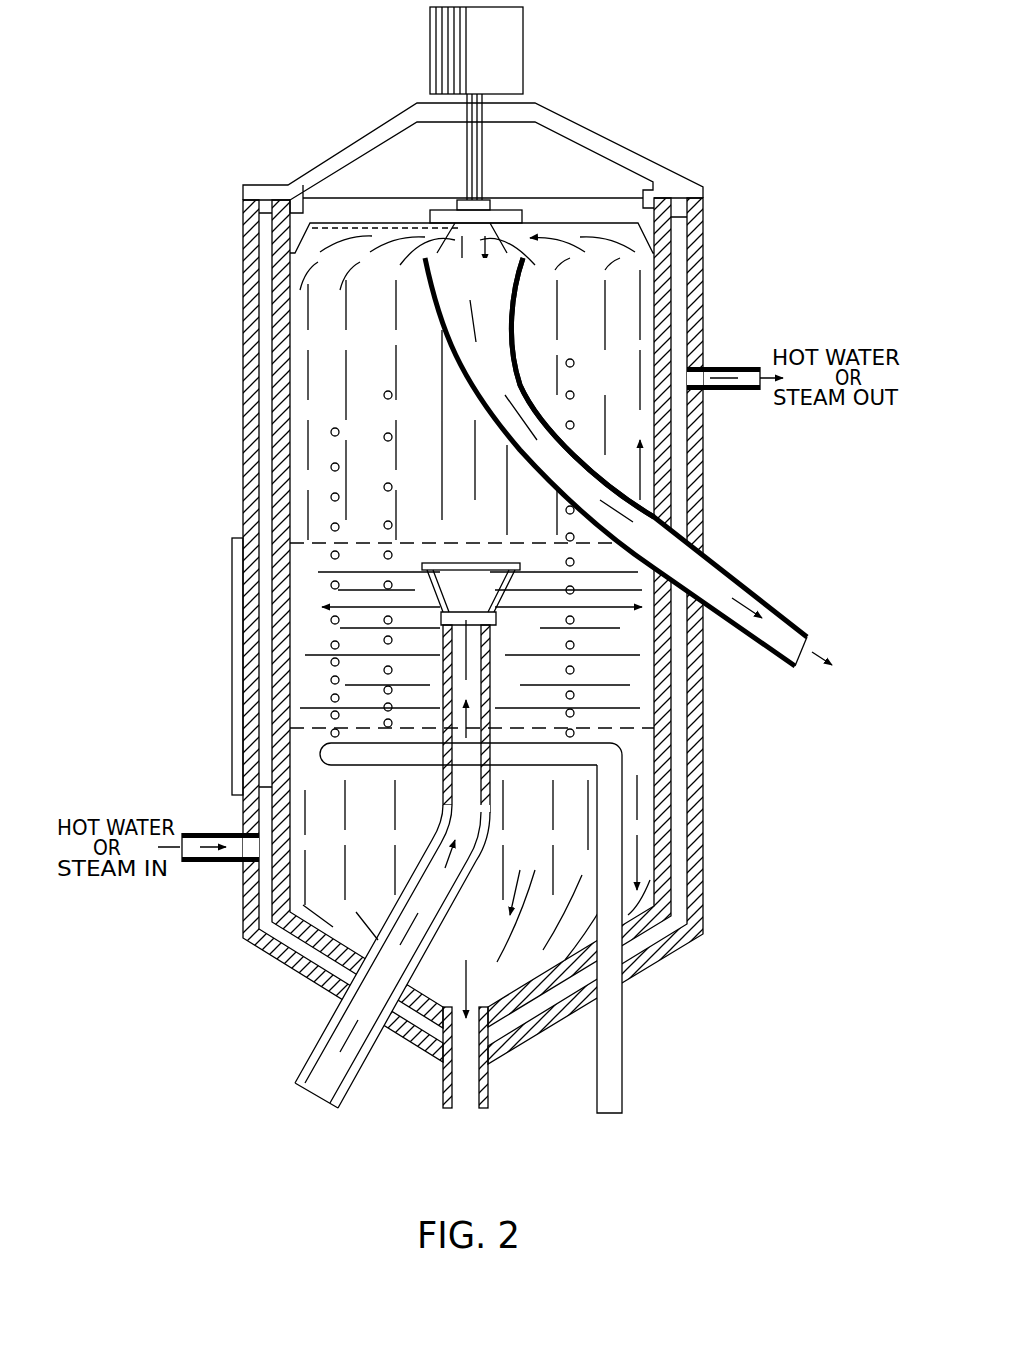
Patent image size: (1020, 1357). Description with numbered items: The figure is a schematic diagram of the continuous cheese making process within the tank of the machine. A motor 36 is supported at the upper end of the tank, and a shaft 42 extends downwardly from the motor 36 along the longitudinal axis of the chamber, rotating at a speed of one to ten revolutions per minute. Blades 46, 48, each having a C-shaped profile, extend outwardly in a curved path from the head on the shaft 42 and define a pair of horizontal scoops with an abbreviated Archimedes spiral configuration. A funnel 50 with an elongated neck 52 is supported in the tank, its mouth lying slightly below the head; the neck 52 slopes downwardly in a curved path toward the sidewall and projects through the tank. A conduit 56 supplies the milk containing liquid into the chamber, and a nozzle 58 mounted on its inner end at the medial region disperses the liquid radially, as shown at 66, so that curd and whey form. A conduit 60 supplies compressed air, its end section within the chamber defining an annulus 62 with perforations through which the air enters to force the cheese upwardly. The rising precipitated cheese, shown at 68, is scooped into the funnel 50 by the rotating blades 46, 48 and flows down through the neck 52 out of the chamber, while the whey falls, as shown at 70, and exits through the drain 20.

The drain 20 is at (488, 1066).
The motor 36 is at (507, 62).
The shaft 42 is at (483, 139).
The blade 46 is at (609, 226).
The blade 48 is at (359, 226).
The funnel 50 is at (485, 402).
The elongated neck 52 is at (589, 469).
The conduit 56 is at (352, 1089).
The nozzle 58 is at (460, 563).
The conduit 60 is at (606, 789).
The annulus 62 is at (340, 765).
The radial dispersion of milk mixture 66 is at (341, 580).
The rising precipitated cheese solids 68 is at (399, 378).
The falling whey 70 is at (345, 873).